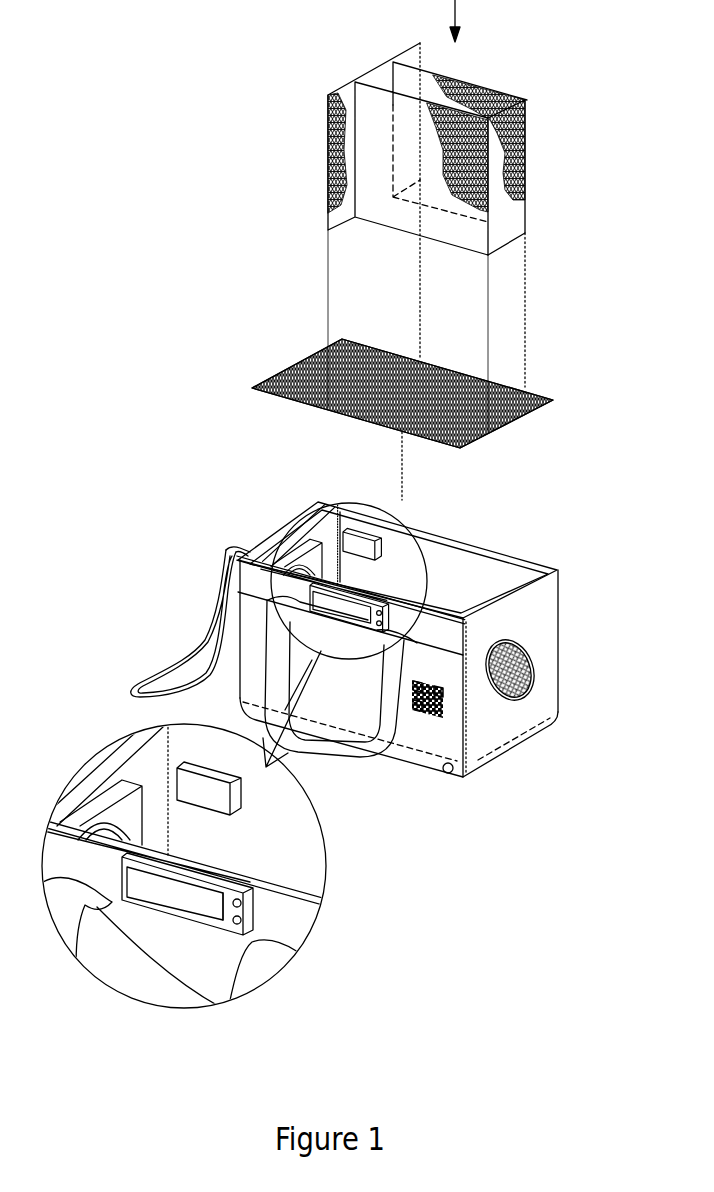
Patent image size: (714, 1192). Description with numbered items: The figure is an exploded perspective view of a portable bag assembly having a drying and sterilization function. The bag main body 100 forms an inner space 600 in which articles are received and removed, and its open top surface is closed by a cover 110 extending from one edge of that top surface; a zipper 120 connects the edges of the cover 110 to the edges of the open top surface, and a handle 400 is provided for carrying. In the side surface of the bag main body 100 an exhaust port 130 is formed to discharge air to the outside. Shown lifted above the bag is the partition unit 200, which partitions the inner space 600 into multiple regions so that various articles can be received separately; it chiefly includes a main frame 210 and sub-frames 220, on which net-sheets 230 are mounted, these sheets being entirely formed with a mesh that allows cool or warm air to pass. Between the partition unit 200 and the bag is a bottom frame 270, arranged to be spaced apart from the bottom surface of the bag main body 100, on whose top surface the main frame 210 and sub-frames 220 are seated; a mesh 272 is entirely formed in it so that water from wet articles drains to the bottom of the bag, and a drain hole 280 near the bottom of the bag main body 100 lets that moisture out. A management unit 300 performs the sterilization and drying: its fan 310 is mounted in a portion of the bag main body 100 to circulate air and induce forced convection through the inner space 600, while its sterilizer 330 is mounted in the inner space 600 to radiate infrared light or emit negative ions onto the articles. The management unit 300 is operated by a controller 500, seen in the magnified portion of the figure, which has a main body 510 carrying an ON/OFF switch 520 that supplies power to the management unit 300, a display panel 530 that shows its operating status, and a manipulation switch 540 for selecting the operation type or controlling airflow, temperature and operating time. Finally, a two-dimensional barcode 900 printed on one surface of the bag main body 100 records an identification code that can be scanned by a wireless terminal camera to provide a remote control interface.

The bag main body 100 is at (552, 613).
The cover 110 is at (178, 655).
The zipper 120 is at (376, 512).
The exhaust port 130 is at (520, 695).
The partition unit 200 is at (281, 223).
The main frame 210 is at (354, 83).
The sub-frames 220 is at (490, 237).
The net-sheets 230 is at (330, 127).
The bottom frame 270 is at (282, 378).
The mesh 272 is at (322, 351).
The drain hole 280 is at (448, 773).
The management unit 300 is at (278, 826).
The fan 310 is at (140, 815).
The sterilizer 330 is at (233, 797).
The handle 400 is at (348, 753).
The controller 500 is at (367, 847).
The main body 510 is at (265, 876).
The ON/OFF switch 520 is at (260, 893).
The display panel 530 is at (241, 919).
The manipulation switch 540 is at (241, 903).
The inner space 600 is at (447, 572).
The two-dimensional barcode 900 is at (445, 706).